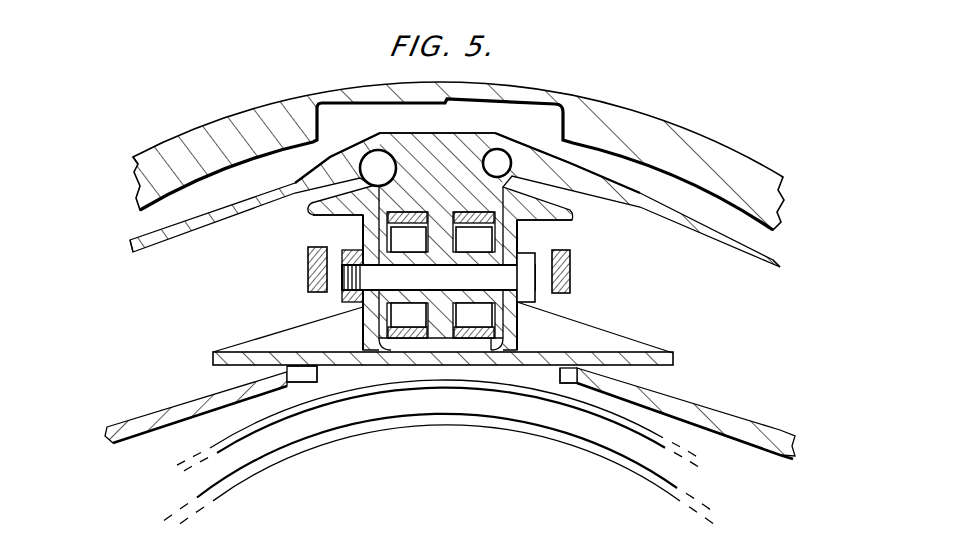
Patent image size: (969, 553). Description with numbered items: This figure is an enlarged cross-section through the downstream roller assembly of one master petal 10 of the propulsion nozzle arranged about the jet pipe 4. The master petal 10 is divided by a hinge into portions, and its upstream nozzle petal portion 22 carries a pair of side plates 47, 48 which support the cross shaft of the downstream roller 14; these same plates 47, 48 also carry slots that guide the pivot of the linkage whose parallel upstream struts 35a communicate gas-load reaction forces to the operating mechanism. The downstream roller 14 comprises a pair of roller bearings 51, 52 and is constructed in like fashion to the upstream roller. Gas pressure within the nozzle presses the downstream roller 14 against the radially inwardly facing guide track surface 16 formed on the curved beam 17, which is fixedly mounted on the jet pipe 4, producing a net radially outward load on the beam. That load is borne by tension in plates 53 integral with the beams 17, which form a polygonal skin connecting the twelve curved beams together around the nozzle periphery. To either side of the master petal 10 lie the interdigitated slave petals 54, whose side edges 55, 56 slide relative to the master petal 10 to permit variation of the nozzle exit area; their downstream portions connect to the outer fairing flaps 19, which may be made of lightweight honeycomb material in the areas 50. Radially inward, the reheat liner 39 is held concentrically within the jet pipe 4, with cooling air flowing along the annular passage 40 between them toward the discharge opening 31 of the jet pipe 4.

The jet pipe 4 is at (647, 426).
The master petal 10 is at (428, 369).
The downstream roller 14 is at (406, 346).
The radially inwardly facing guide track surface 16 is at (408, 212).
The curved beam 17 is at (503, 156).
The outer fairing flap 19 is at (222, 128).
The upstream nozzle petal portion 22 is at (612, 354).
The discharge opening 31 is at (253, 438).
The upstream struts 35a is at (308, 268).
The reheat liner 39 is at (605, 452).
The annular passage 40 is at (648, 455).
The side plate 47 is at (363, 225).
The side plate 48 is at (517, 230).
The areas of the flaps 50 is at (158, 155).
The roller bearing 51 is at (491, 344).
The roller bearing 52 is at (367, 364).
The plates 53 is at (185, 225).
The slave petals 54 is at (176, 413).
The side edge 55 is at (320, 372).
The side edge 56 is at (557, 380).